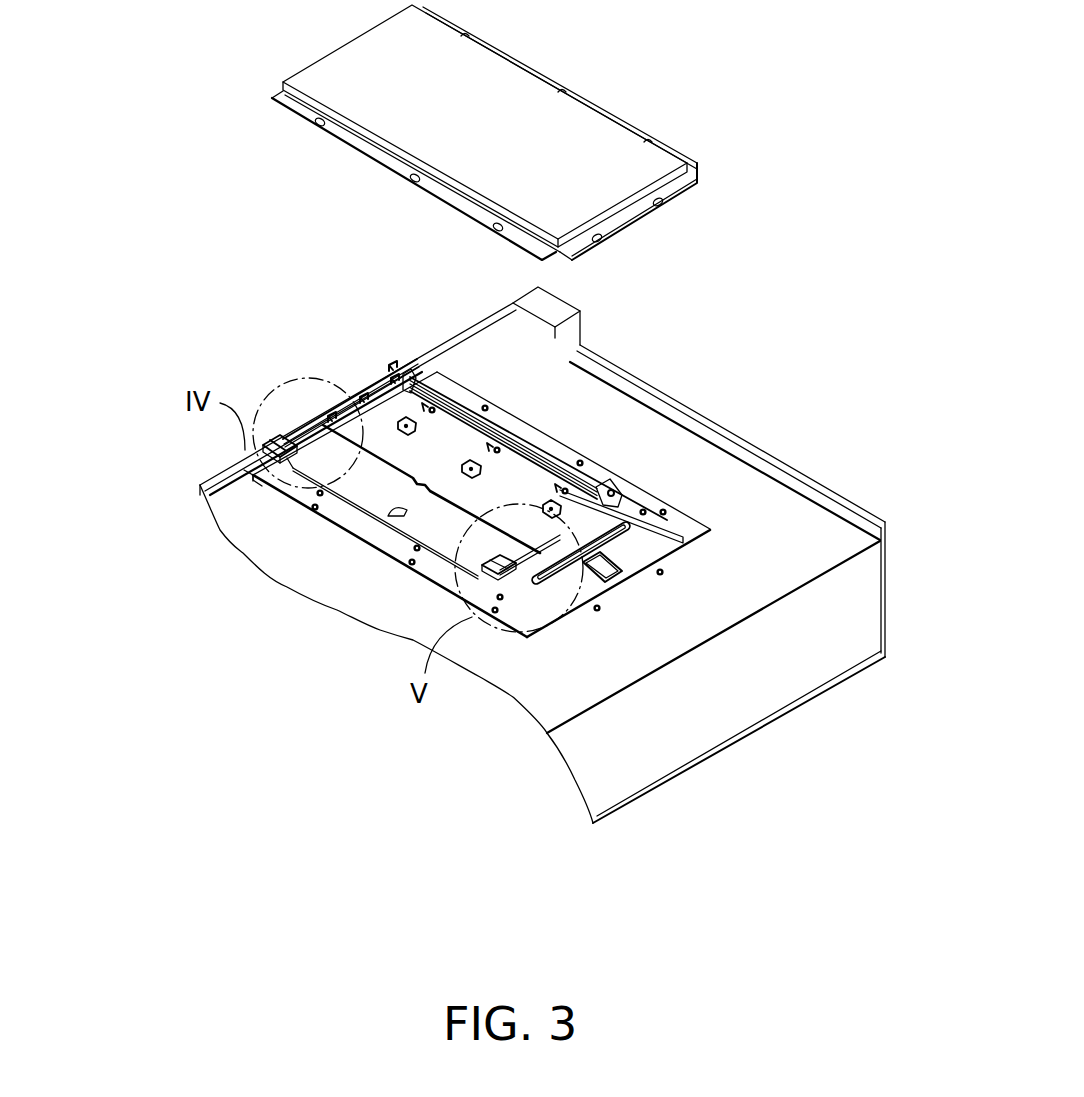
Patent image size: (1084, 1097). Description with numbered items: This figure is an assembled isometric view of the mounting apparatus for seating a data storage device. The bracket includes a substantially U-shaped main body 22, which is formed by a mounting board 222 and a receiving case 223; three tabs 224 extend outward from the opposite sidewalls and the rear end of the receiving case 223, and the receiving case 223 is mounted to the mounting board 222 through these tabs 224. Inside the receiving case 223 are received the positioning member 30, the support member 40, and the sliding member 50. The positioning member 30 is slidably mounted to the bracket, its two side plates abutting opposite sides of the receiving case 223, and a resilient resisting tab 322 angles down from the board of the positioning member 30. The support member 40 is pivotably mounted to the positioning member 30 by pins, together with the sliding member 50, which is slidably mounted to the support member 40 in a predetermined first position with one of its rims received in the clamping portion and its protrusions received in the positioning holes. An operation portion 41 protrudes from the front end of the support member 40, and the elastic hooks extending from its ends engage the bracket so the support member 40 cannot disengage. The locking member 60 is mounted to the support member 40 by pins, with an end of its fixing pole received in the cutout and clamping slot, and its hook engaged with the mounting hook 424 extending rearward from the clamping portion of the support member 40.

The main body 22 is at (780, 655).
The mounting board 222 is at (353, 517).
The receiving case 223 is at (537, 133).
The tabs 224 is at (345, 137).
The positioning member 30 is at (647, 557).
The resilient resisting tab 322 is at (618, 583).
The support member 40 is at (439, 401).
The operation portion 41 is at (258, 420).
The mounting hook 424 is at (562, 568).
The sliding member 50 is at (256, 477).
The locking member 60 is at (363, 437).